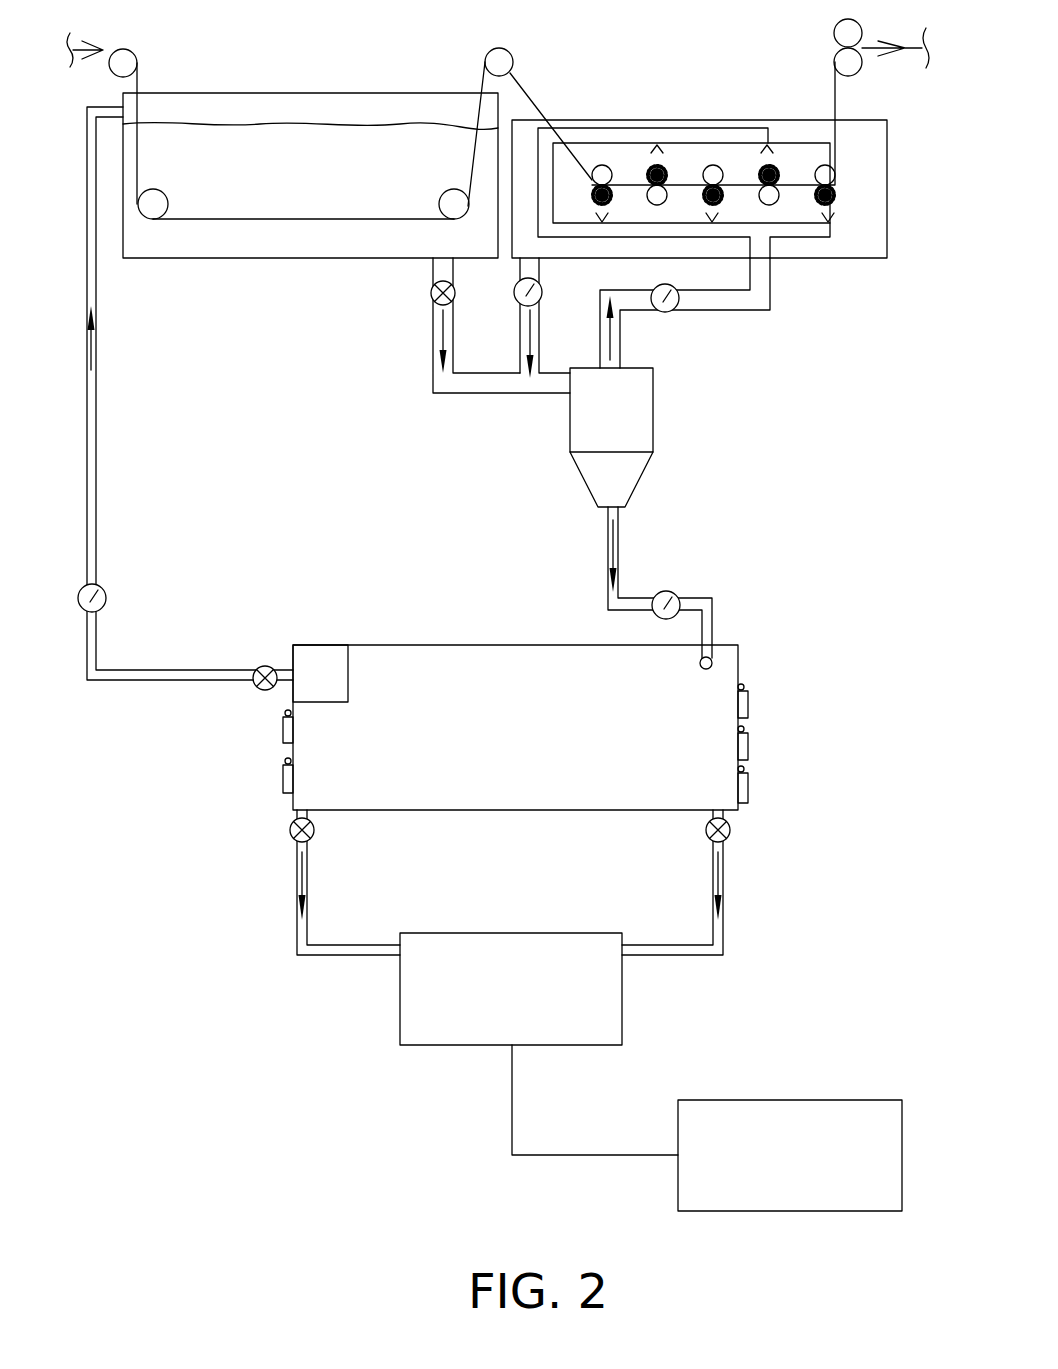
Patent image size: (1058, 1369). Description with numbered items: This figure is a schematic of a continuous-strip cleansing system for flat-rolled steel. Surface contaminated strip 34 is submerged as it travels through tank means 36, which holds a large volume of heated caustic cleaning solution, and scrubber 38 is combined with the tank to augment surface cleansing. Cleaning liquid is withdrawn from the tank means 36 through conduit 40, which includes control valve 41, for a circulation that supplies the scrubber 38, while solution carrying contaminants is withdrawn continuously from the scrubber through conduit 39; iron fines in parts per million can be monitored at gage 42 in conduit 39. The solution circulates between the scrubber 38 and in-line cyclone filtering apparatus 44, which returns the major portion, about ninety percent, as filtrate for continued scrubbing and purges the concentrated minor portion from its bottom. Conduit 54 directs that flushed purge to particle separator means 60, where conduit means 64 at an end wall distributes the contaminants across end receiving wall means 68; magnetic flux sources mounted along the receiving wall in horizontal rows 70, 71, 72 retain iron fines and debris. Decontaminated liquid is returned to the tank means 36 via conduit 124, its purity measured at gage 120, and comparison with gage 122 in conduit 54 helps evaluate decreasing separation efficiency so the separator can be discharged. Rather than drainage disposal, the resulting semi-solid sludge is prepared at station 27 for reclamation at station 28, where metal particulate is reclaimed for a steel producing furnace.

The surface contaminated strip 34 is at (110, 45).
The tank means 36 is at (291, 174).
The scrubber 38 is at (712, 118).
The conduit 39 is at (540, 268).
The conduit 40 is at (433, 350).
The control valve 41 is at (431, 293).
The gage 42 is at (514, 293).
The in-line cyclone filtering apparatus 44 is at (618, 424).
The conduit 54 is at (618, 550).
The particle separator means 60 is at (536, 751).
The conduit means 64 is at (712, 668).
The end receiving wall means 68 is at (740, 672).
The horizontal row of magnetic flux source means 70 is at (750, 703).
The horizontal row of magnetic flux source means 71 is at (750, 743).
The horizontal row of magnetic flux source means 72 is at (750, 786).
The gage 120 is at (107, 608).
The gage 122 is at (668, 590).
The conduit 124 is at (96, 422).
The station 27 is at (508, 1006).
The station 28 is at (798, 1164).